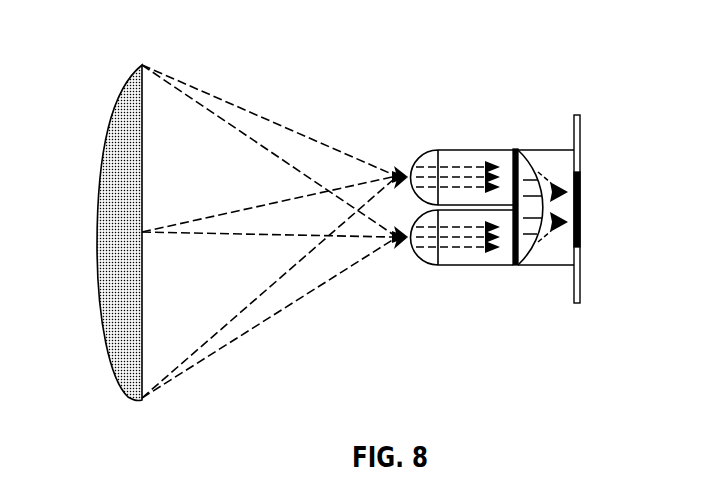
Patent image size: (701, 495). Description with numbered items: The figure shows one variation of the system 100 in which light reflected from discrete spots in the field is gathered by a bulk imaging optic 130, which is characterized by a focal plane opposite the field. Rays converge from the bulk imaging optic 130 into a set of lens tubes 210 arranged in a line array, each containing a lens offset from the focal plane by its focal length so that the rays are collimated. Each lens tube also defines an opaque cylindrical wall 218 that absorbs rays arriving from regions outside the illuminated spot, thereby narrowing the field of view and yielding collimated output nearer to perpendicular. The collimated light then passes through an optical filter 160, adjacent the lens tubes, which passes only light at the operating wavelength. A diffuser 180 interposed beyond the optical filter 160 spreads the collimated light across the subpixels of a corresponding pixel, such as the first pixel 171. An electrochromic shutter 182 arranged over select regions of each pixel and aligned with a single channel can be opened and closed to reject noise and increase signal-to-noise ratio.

The system 100 is at (87, 55).
The bulk imaging optic 130 is at (128, 353).
The set of lens tubes 210 is at (425, 153).
The cylindrical wall 218 is at (468, 151).
The optical filter 160 is at (515, 265).
The diffuser 180 is at (527, 157).
The shutter 182 is at (580, 123).
The first pixel 171 is at (594, 155).